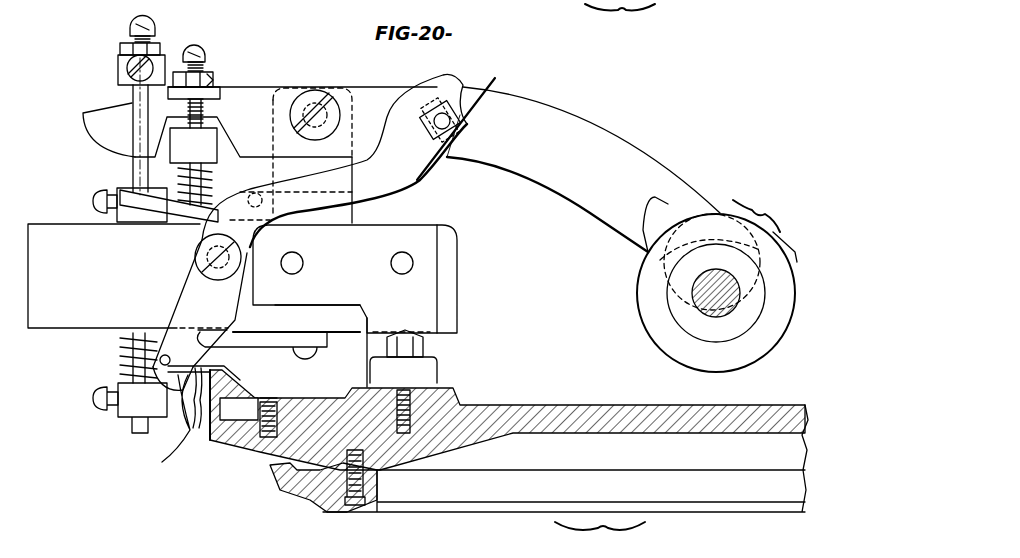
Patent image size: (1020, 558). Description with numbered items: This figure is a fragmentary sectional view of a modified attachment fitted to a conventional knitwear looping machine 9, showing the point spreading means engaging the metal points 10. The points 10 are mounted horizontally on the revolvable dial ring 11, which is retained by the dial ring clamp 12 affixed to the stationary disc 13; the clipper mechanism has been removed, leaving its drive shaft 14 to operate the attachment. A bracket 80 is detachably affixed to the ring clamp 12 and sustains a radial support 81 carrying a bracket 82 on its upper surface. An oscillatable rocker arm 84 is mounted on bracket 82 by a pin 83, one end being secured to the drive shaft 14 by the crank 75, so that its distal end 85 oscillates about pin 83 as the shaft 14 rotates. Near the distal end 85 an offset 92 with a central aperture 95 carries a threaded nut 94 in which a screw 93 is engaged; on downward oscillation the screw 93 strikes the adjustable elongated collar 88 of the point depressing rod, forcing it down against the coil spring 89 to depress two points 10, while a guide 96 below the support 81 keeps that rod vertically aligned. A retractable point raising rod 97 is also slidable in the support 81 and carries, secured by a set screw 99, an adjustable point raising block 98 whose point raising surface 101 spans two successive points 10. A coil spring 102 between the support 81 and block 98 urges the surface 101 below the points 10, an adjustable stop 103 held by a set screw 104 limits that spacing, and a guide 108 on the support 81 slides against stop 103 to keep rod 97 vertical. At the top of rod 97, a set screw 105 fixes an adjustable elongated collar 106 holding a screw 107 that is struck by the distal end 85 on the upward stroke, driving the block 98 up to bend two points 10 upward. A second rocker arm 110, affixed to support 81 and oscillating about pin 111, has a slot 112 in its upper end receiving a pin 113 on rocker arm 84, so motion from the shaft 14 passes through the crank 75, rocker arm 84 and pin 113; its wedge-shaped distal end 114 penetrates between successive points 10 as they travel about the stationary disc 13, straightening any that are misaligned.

The knitwear looping machine 9 is at (605, 280).
The metal points 10 is at (186, 409).
The dial ring 11 is at (305, 398).
The dial ring clamp 12 is at (450, 395).
The stationary disc 13 is at (536, 410).
The clipper mechanism drive shaft 14 is at (759, 207).
The crank 75 is at (713, 214).
The bracket 80 is at (438, 278).
The radial support 81 is at (51, 328).
The bracket 82 is at (313, 88).
The pin 83 is at (330, 102).
The rocker arm 84 is at (572, 135).
The distal end 85 is at (95, 127).
The adjustable elongated collar 88 is at (243, 131).
The coil spring 89 is at (208, 197).
The offset 92 is at (218, 96).
The screw 93 is at (205, 50).
The threaded nut 94 is at (212, 78).
The aperture 95 is at (216, 82).
The guide 96 is at (230, 347).
The point raising rod 97 is at (138, 143).
The point raising block 98 is at (128, 415).
The set screw 99 is at (93, 398).
The point raising surface 101 is at (182, 423).
The coil spring 102 is at (122, 354).
The adjustable stop 103 is at (145, 193).
The set screw 104 is at (93, 201).
The set screw 105 is at (126, 78).
The adjustable elongated collar 106 is at (120, 66).
The screw 107 is at (152, 22).
The guide 108 is at (150, 205).
The second rocker arm 110 is at (392, 204).
The pin 111 is at (206, 253).
The slot 112 is at (458, 114).
The pin 113 is at (473, 120).
The distal end 114 is at (172, 345).